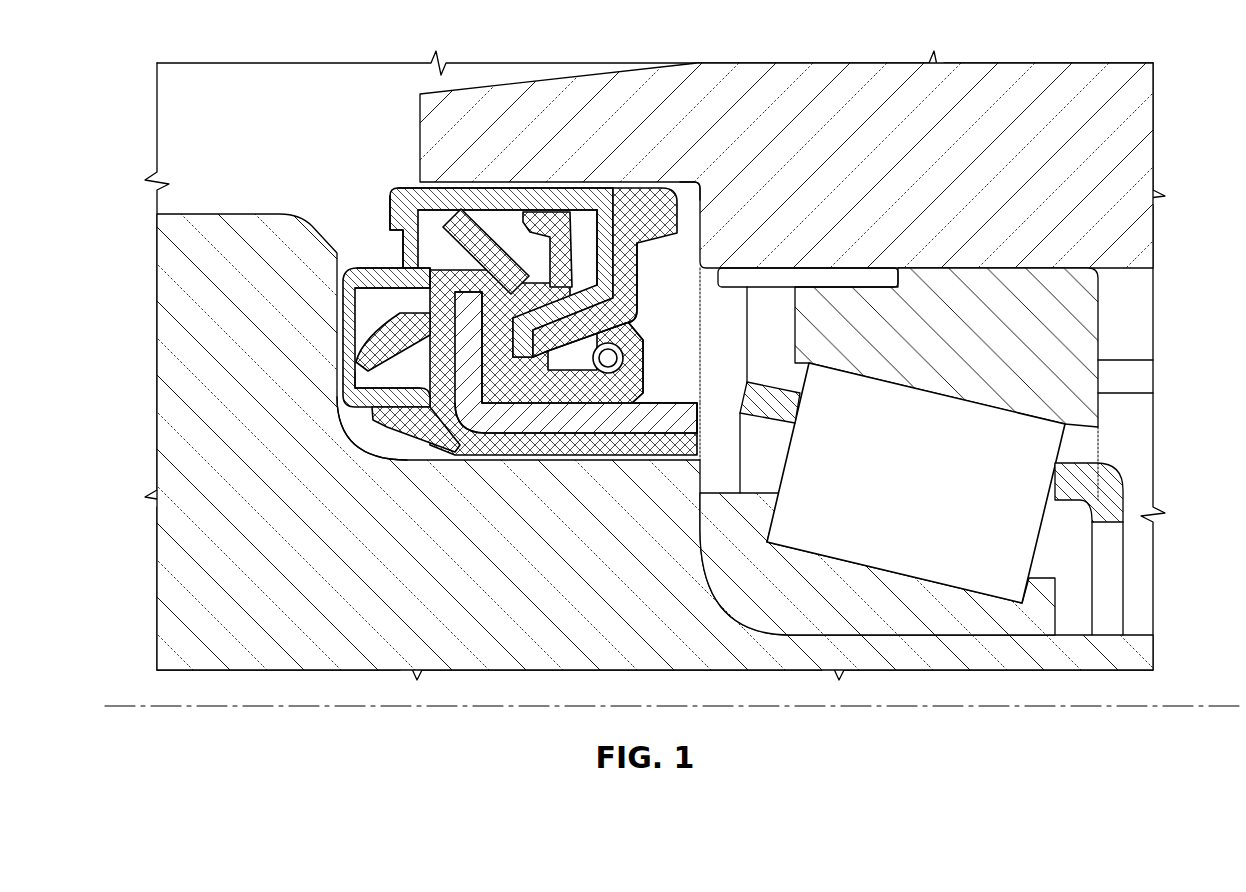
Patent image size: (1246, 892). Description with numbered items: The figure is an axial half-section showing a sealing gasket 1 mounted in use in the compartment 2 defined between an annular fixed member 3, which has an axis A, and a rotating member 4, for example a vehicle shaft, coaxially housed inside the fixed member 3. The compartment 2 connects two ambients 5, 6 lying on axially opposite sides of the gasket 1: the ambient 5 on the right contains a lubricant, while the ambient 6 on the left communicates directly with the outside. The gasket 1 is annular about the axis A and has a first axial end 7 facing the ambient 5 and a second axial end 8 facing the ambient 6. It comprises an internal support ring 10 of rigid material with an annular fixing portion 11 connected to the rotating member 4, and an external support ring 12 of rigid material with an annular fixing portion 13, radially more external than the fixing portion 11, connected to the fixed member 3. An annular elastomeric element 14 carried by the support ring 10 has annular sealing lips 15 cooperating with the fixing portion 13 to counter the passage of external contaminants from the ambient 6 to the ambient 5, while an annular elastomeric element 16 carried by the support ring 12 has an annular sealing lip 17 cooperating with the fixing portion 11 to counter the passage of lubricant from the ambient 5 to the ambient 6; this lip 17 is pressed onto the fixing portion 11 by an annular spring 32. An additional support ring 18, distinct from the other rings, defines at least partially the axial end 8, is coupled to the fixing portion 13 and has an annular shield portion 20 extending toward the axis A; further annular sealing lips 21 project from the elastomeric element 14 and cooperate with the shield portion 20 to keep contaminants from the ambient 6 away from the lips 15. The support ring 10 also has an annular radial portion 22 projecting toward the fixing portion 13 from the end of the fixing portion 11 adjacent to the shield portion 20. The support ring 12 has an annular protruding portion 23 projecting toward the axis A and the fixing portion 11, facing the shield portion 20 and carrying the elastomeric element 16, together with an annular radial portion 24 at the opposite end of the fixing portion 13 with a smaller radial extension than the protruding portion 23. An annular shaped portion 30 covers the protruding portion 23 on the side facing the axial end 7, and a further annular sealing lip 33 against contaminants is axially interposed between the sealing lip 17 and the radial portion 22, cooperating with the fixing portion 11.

The sealing gasket 1 is at (492, 303).
The compartment 2 is at (690, 185).
The annular fixed member 3 is at (800, 88).
The rotating member 4 is at (165, 560).
The ambient 5 is at (727, 300).
The ambient 6 is at (316, 164).
The first axial end 7 is at (703, 435).
The second axial end 8 is at (334, 396).
The internal support ring 10 is at (553, 432).
The annular fixing portion 11 is at (598, 440).
The external support ring 12 is at (532, 186).
The annular fixing portion 13 is at (495, 195).
The annular elastomeric element 14 is at (450, 453).
The annular sealing lips 15 is at (450, 212).
The annular elastomeric element 16 is at (645, 189).
The annular sealing lip 17 is at (620, 400).
The additional support ring 18 is at (368, 262).
The annular shield portion 20 is at (348, 302).
The further annular sealing lips 21 is at (360, 355).
The annular radial portion 22 is at (440, 370).
The annular protruding portion 23 is at (620, 215).
The annular radial portion 24 is at (388, 215).
The annular shaped portion 30 is at (635, 275).
The annular spring 32 is at (625, 355).
The further annular sealing lip 33 is at (520, 432).
The axis A is at (1190, 695).